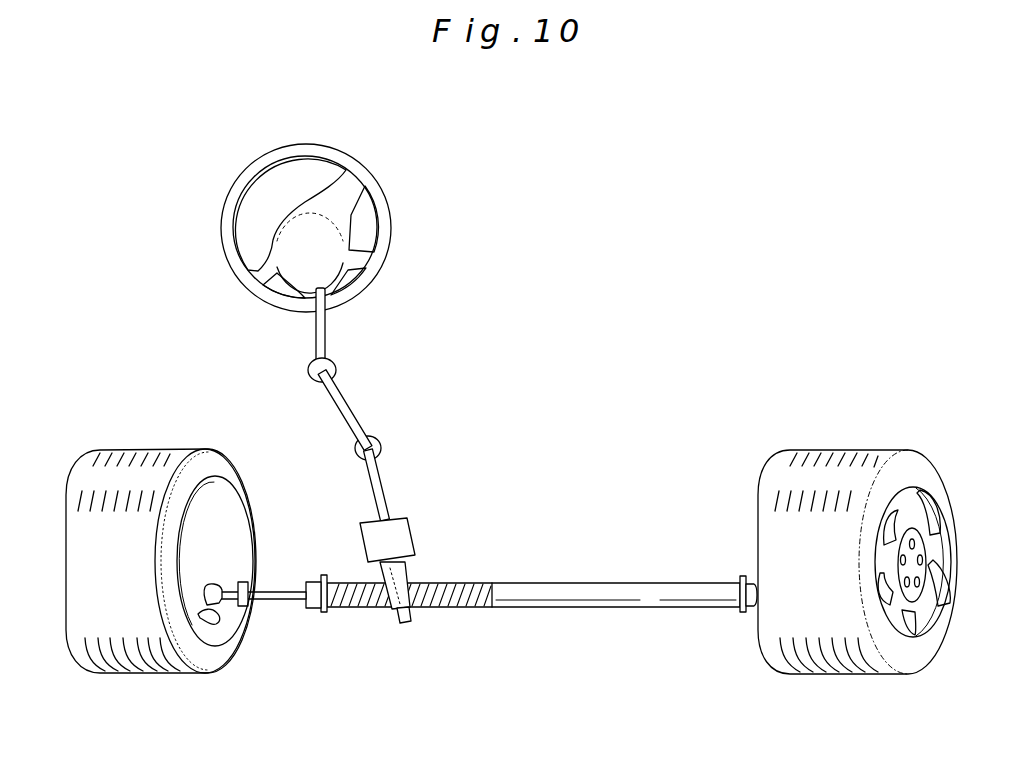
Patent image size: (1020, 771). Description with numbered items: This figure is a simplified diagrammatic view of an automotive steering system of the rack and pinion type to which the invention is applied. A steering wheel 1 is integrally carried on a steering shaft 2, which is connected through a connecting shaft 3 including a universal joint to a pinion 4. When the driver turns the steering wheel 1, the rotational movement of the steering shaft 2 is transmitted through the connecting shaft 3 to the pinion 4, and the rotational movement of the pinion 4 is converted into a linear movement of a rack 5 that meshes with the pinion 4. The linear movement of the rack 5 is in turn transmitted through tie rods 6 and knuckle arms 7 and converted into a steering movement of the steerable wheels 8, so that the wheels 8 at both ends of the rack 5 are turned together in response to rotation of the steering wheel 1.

The steering wheel 1 is at (390, 225).
The steering shaft 2 is at (326, 333).
The connecting shaft 3 is at (350, 406).
The pinion 4 is at (391, 611).
The rack 5 is at (470, 606).
The tie rod 6 is at (297, 602).
The knuckle arm 7 is at (216, 624).
The steerable wheel 8 is at (153, 674).